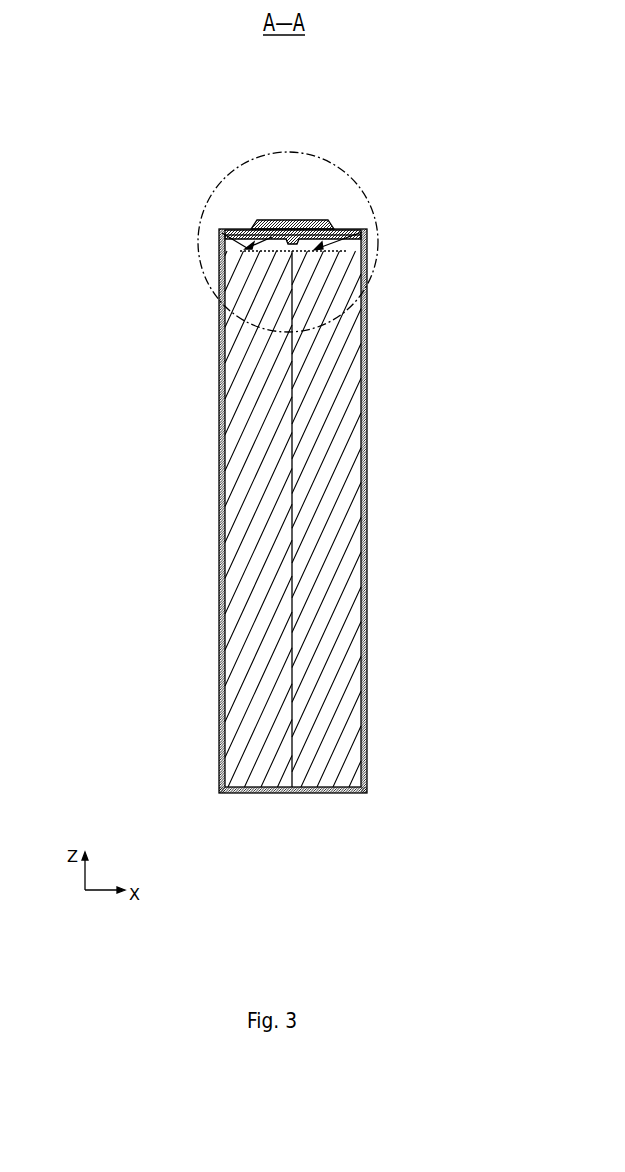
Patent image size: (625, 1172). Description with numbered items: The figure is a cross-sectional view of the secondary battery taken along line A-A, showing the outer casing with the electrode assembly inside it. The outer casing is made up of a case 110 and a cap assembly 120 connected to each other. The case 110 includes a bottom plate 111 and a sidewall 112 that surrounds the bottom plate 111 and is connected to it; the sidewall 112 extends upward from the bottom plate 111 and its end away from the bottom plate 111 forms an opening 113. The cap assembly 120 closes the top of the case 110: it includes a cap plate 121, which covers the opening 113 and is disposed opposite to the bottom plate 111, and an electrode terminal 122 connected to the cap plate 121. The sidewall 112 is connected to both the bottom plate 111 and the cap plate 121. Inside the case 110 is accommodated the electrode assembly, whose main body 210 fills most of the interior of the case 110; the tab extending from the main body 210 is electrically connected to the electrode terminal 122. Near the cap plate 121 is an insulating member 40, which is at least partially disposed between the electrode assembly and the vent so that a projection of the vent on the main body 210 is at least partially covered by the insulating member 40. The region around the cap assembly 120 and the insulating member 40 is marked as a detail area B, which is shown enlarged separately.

The case 110 is at (211, 511).
The bottom plate 111 is at (237, 783).
The sidewall 112 is at (221, 686).
The opening 113 is at (318, 252).
The cap assembly 120 is at (219, 206).
The cap plate 121 is at (223, 236).
The electrode terminal 122 is at (270, 224).
The main body 210 is at (272, 502).
The insulating member 40 is at (247, 250).
The detail region B is at (370, 203).